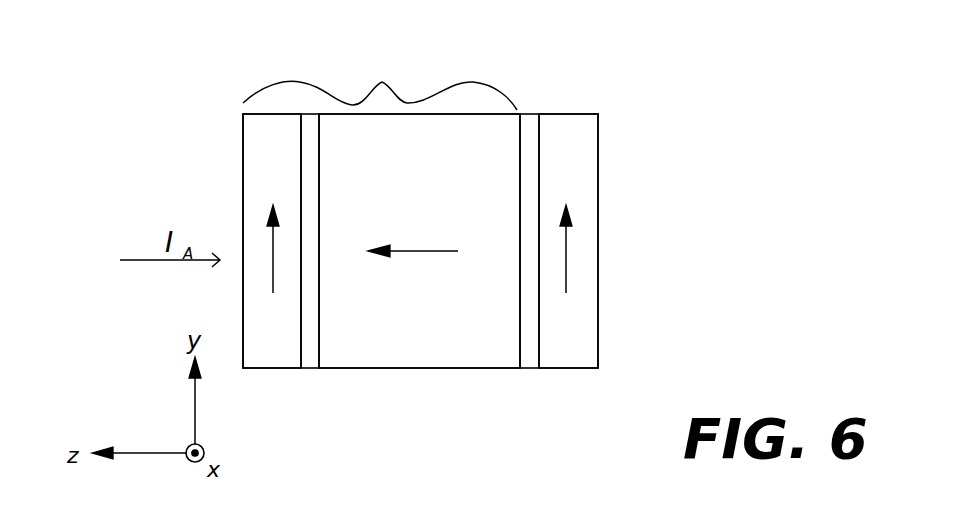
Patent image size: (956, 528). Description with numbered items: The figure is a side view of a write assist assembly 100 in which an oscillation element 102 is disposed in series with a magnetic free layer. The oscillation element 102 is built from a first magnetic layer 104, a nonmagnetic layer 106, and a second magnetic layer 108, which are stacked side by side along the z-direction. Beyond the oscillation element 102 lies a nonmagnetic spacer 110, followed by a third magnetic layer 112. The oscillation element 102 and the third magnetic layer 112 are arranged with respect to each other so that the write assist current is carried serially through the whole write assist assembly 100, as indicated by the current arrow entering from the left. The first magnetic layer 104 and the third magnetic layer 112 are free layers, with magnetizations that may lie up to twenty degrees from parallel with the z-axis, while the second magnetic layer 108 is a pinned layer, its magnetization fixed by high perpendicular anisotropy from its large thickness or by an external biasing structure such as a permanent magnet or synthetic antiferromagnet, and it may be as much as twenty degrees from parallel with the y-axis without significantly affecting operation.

The write assist assembly 100 is at (665, 98).
The oscillation element 102 is at (380, 80).
The first magnetic layer 104 is at (252, 152).
The nonmagnetic layer 106 is at (311, 360).
The second magnetic layer 108 is at (430, 357).
The nonmagnetic spacer 110 is at (525, 360).
The third magnetic layer 112 is at (583, 327).